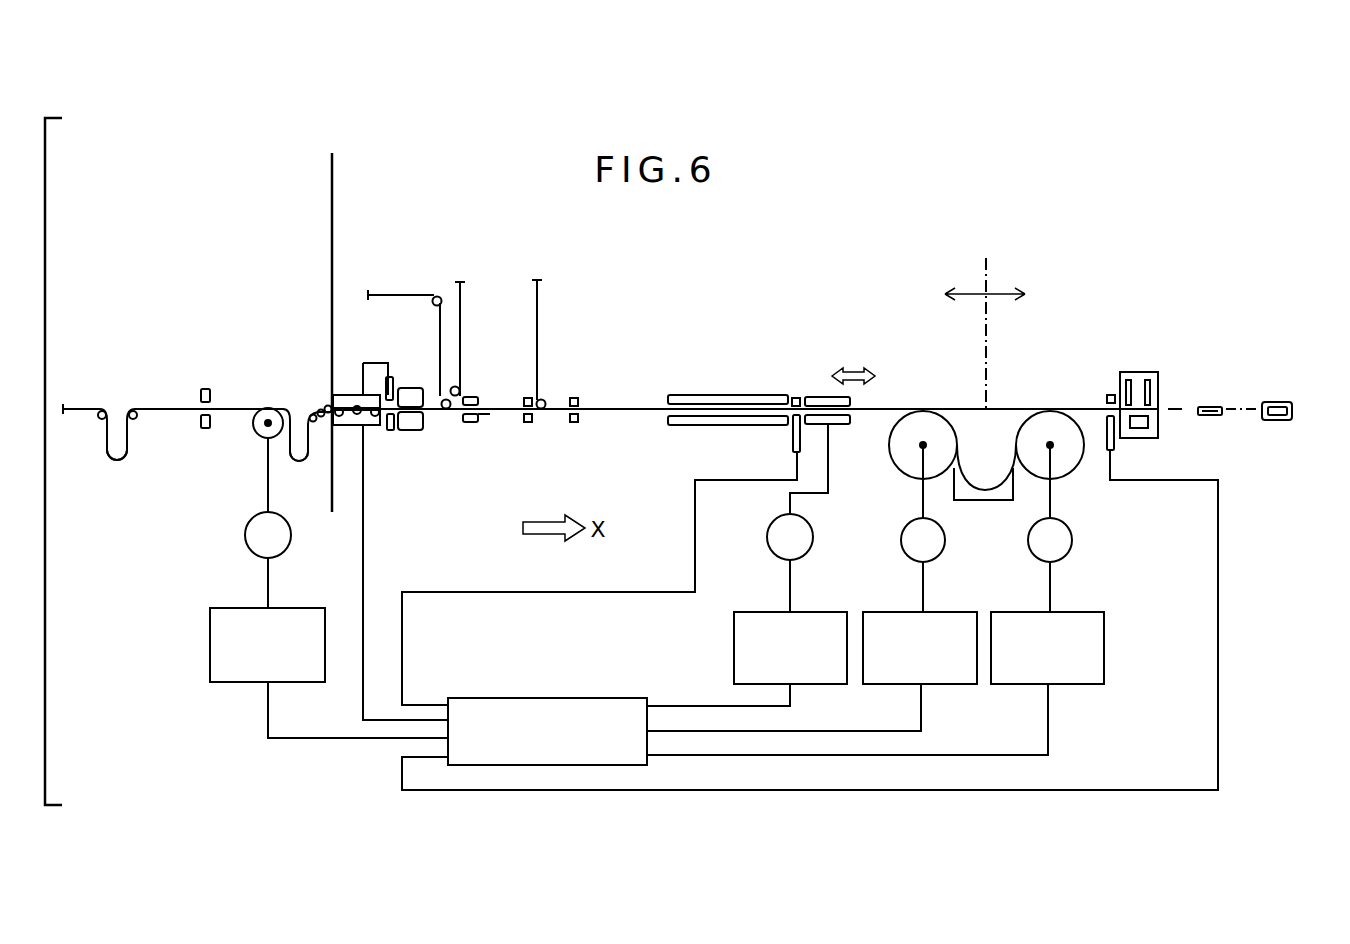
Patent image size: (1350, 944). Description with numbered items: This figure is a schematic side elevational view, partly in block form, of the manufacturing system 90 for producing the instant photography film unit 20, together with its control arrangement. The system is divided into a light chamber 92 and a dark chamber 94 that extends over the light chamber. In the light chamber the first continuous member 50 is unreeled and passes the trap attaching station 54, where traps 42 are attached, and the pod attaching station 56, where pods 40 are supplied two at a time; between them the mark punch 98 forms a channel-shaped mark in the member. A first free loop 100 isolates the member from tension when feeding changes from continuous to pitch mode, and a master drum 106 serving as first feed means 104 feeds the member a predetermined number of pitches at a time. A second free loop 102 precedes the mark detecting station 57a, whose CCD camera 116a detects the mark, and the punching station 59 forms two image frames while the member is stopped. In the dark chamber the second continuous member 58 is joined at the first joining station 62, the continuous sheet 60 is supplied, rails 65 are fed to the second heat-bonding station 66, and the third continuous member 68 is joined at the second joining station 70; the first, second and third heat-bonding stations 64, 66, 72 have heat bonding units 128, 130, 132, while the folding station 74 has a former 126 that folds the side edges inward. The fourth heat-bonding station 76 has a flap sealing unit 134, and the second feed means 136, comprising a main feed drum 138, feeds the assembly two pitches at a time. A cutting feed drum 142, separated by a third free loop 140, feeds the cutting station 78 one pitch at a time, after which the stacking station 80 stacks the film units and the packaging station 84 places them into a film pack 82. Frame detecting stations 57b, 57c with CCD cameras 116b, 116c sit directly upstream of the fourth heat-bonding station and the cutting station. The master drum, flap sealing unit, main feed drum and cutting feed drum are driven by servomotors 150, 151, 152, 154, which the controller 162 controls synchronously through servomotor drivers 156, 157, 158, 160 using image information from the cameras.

The instant photography film unit 20 is at (1210, 418).
The pods 40 is at (221, 404).
The traps 42 is at (187, 404).
The first continuous member 50 is at (85, 413).
The trap attaching station 54 is at (175, 416).
The pod attaching station 56 is at (229, 415).
The mark detecting station 57a is at (390, 429).
The frame detecting station 57b is at (790, 394).
The frame detecting station 57c is at (1107, 392).
The second continuous member 58 is at (392, 294).
The punching station 59 is at (405, 383).
The continuous sheet 60 is at (462, 300).
The first joining station 62 is at (447, 417).
The first heat-bonding station 64 is at (481, 427).
The rails 65 is at (518, 403).
The second heat-bonding station 66 is at (538, 425).
The third continuous member 68 is at (540, 300).
The second joining station 70 is at (549, 400).
The third heat-bonding station 72 is at (585, 422).
The folding station 74 is at (708, 393).
The fourth heat-bonding station 76 is at (820, 394).
The cutting station 78 is at (1163, 392).
The stacking station 80 is at (1223, 402).
The film pack 82 is at (1275, 423).
The packaging station 84 is at (1280, 400).
The manufacturing system 90 is at (882, 232).
The light chamber 92 is at (268, 166).
The dark chamber 94 is at (368, 166).
The mark punch 98 is at (204, 388).
The first free loop 100 is at (112, 463).
The second free loop 102 is at (300, 462).
The first feed means 104 is at (298, 324).
The master drum 106 is at (283, 409).
The CCD camera 116a is at (372, 380).
The CCD camera 116b is at (792, 438).
The CCD camera 116c is at (1115, 440).
The former 126 is at (713, 426).
The heat bonding units 128 is at (471, 428).
The heat bonding units 130 is at (528, 428).
The heat bonding units 132 is at (580, 418).
The flap sealing unit 134 is at (835, 426).
The second feed means 136 is at (930, 406).
The main feed drum 138 is at (897, 455).
The third free loop 140 is at (985, 500).
The cutting feed drum 142 is at (1070, 462).
The servomotor 150 is at (290, 540).
The servomotor 151 is at (767, 537).
The servomotor 152 is at (900, 538).
The servomotor 154 is at (1073, 538).
The servomotor driver 156 is at (296, 608).
The servomotor driver 157 is at (822, 612).
The servomotor driver 158 is at (950, 612).
The servomotor driver 160 is at (1088, 612).
The controller 162 is at (615, 698).